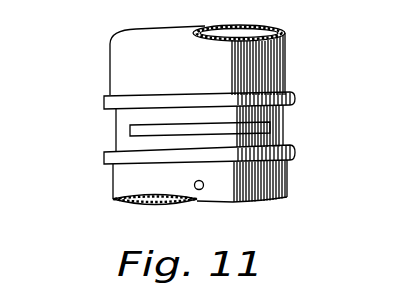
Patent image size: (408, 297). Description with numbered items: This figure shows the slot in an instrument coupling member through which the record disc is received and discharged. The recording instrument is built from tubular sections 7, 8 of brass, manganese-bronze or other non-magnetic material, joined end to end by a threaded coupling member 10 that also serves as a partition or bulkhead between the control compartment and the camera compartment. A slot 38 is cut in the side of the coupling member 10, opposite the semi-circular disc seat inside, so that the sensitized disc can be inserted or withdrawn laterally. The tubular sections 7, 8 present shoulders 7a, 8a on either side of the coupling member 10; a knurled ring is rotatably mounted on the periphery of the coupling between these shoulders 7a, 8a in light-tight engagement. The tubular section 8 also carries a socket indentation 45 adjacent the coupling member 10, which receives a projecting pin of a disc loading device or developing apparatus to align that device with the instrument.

The tubular section 7 is at (117, 77).
The shoulder 7a is at (303, 97).
The tubular section 8 is at (120, 184).
The shoulder 8a is at (296, 156).
The coupling member 10 is at (123, 119).
The slot 38 is at (270, 128).
The socket indentation 45 is at (201, 189).